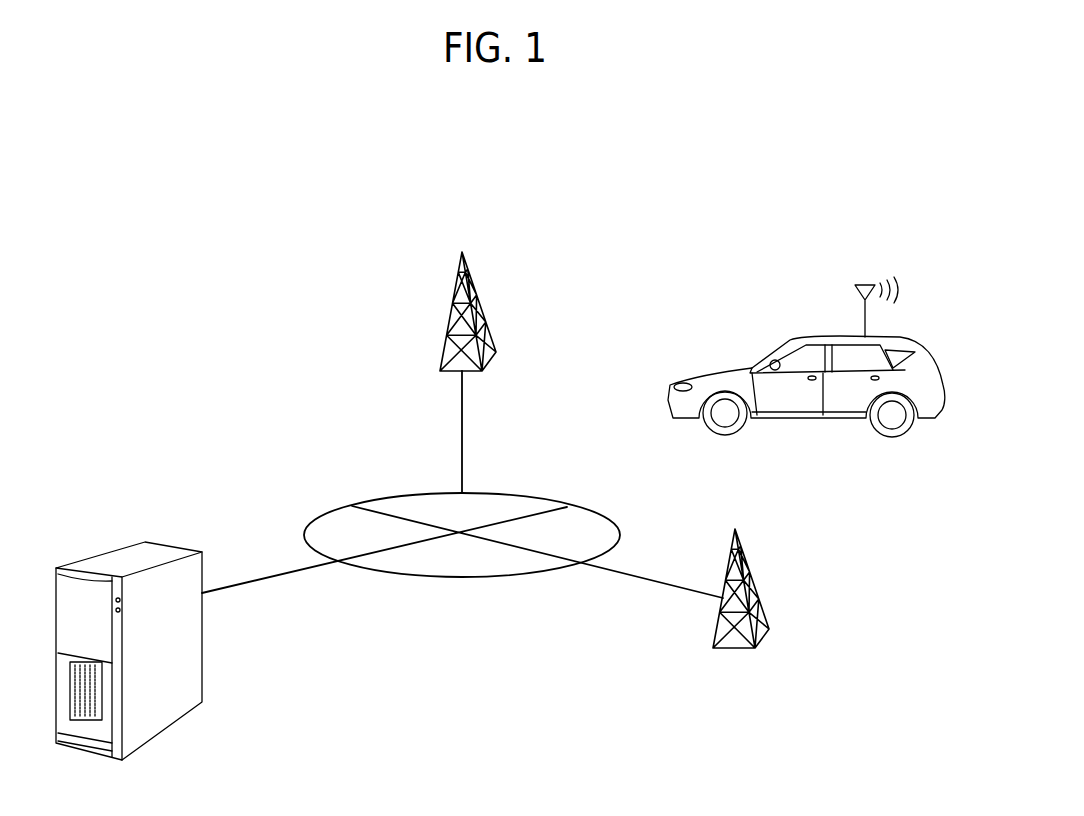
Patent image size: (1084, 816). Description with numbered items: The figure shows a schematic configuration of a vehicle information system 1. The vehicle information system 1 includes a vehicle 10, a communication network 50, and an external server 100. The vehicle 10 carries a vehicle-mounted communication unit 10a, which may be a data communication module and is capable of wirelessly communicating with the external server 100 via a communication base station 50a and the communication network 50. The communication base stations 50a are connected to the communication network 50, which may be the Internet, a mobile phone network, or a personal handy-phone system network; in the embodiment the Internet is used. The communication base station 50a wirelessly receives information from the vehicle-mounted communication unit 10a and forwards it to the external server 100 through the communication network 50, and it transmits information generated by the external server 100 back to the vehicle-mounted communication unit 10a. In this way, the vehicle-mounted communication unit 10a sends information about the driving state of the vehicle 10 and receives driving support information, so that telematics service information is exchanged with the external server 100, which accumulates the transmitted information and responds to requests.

The vehicle information system 1 is at (487, 192).
The vehicle 10 is at (806, 356).
The vehicle-mounted communication unit 10a is at (832, 337).
The communication network 50 is at (597, 512).
The communication base station 50a is at (481, 288).
The external server 100 is at (168, 543).